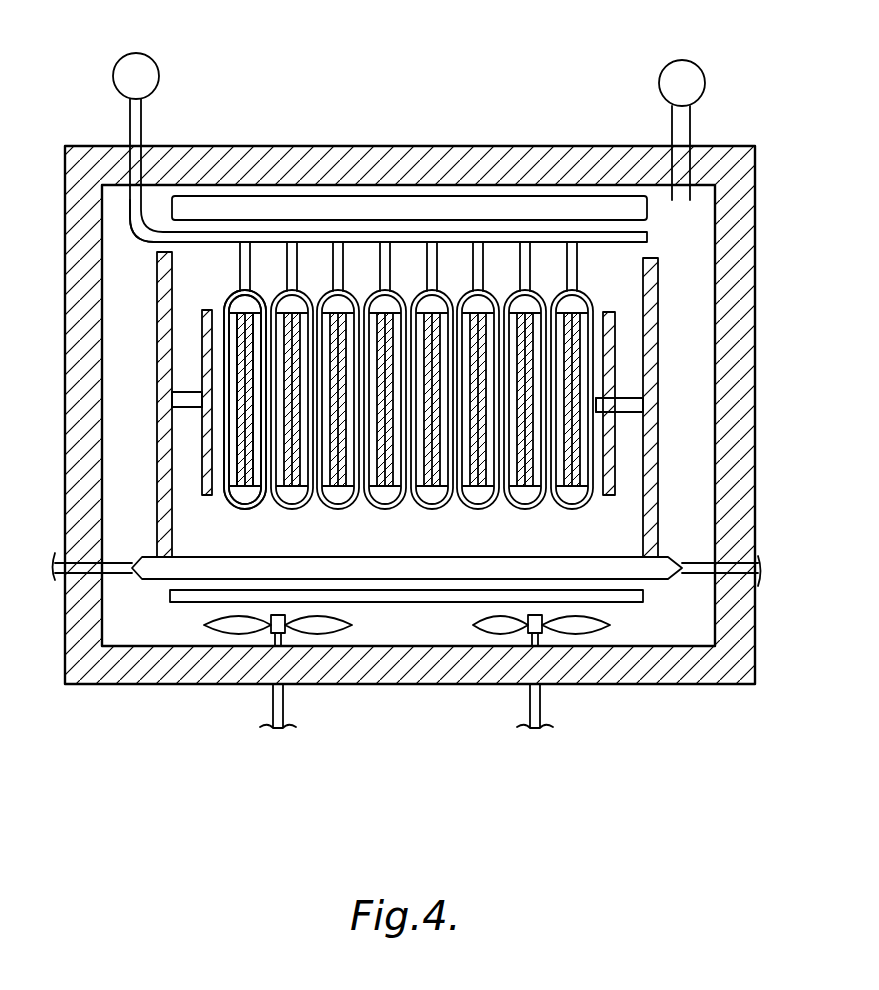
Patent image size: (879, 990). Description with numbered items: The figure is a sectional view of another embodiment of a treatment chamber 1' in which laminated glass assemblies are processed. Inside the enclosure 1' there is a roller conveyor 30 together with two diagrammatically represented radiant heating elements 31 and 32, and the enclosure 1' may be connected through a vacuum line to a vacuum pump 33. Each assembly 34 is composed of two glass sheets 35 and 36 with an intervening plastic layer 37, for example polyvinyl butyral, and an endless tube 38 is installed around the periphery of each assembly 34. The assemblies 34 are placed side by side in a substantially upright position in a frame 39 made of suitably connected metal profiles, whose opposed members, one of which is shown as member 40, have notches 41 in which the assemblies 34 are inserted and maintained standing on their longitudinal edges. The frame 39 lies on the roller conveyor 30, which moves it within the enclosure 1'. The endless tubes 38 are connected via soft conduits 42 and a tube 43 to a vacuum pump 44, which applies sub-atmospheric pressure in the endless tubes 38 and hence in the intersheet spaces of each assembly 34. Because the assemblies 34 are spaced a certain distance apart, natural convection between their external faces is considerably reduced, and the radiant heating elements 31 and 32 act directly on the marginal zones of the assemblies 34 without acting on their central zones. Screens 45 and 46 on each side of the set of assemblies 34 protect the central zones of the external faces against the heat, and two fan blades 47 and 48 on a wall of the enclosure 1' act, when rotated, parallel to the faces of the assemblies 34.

The chamber 1' is at (410, 468).
The roller conveyor 30 is at (648, 572).
The radiant heating element 31 is at (628, 603).
The radiant heating element 32 is at (403, 206).
The vacuum pump 33 is at (672, 82).
The assembly 34 is at (213, 350).
The glass sheet 35 is at (226, 504).
The glass sheet 36 is at (254, 504).
The plastic layer 37 is at (240, 490).
The endless tube 38 is at (424, 292).
The frame 39 is at (666, 328).
The opposed member 40 is at (641, 413).
The notch 41 is at (216, 392).
The soft conduit 42 is at (238, 257).
The tube 43 is at (142, 239).
The vacuum pump 44 is at (141, 72).
The screen 45 is at (202, 470).
The screen 46 is at (612, 482).
The fan blade 47 is at (343, 626).
The fan blade 48 is at (470, 626).